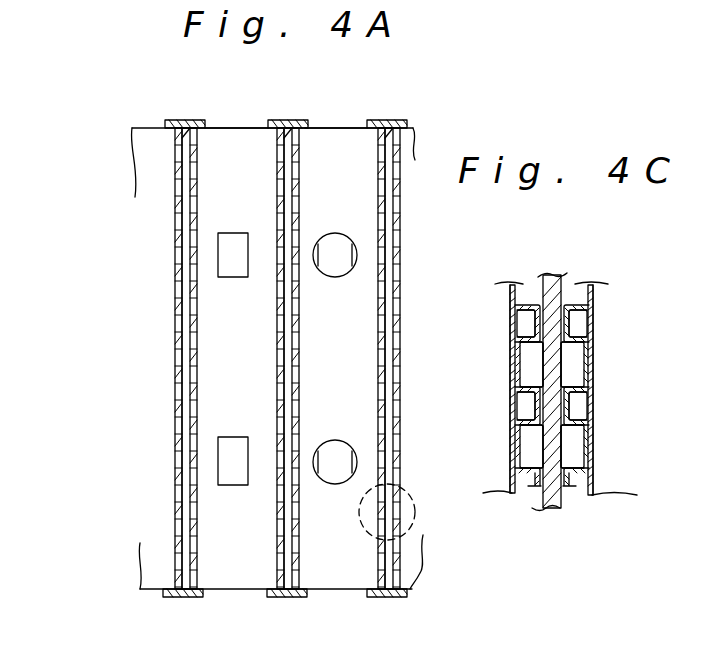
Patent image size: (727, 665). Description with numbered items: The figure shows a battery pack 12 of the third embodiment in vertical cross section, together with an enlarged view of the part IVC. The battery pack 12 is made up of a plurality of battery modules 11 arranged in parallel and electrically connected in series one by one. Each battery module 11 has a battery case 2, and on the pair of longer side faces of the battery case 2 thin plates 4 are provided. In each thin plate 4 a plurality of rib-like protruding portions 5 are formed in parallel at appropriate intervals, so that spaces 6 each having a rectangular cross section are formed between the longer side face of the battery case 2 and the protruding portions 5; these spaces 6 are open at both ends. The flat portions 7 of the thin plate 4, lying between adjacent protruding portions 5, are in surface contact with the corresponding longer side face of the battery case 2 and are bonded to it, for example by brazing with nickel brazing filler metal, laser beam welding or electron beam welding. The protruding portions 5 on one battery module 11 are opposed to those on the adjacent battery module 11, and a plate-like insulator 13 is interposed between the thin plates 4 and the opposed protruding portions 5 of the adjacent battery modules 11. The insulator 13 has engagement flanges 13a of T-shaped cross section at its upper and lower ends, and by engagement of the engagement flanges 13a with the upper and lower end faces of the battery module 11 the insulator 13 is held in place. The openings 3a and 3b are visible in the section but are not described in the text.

In FIG. 4C, the battery case 2 is at (495, 478).
In FIG. 4A, the square hole 3a is at (236, 250).
In FIG. 4A, the round hole 3b is at (338, 246).
In FIG. 4A, the thin plate 4 is at (175, 340).
In FIG. 4C, the thin plate 4 is at (517, 290).
In FIG. 4C, the rib-like protruding portion 5 is at (528, 478).
In FIG. 4C, the space 6 is at (524, 320).
In FIG. 4C, the flat portion 7 is at (510, 365).
In FIG. 4A, the battery module 11 is at (241, 108).
In FIG. 4A, the battery pack 12 is at (90, 154).
In FIG. 4A, the insulator 13 is at (178, 217).
In FIG. 4C, the insulator 13 is at (545, 506).
In FIG. 4A, the engagement flange 13a is at (170, 120).
In FIG. 4A, the part IVC is at (407, 532).